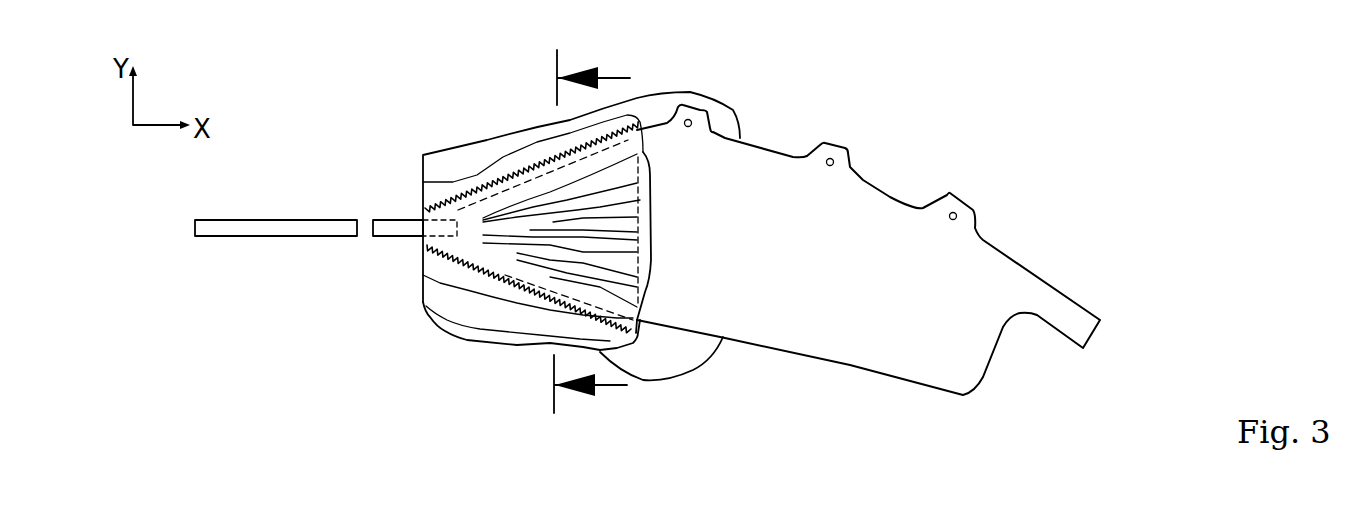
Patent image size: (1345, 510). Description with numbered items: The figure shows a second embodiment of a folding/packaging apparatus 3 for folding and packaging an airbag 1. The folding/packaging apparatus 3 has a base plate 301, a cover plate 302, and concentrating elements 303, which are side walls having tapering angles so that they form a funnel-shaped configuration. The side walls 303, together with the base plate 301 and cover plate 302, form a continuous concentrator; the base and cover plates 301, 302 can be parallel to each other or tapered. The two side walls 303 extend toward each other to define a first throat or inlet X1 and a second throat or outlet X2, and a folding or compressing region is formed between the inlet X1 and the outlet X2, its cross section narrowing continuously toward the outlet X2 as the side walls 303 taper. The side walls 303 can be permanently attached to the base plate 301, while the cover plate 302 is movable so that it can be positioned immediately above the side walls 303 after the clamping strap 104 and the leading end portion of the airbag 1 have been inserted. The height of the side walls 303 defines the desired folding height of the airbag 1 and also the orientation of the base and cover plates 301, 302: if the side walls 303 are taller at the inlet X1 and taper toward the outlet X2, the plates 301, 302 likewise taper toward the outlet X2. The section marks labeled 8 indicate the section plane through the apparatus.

The airbag 1 is at (878, 210).
The folding/packaging apparatus 3 is at (435, 325).
The clamping strap 104 is at (283, 226).
The base plate 301 is at (687, 355).
The cover plate 302 is at (437, 267).
The concentrating elements 303 is at (503, 175).
The first throat or inlet X1 is at (643, 173).
The second throat or outlet X2 is at (420, 214).
The section line 8 is at (603, 231).